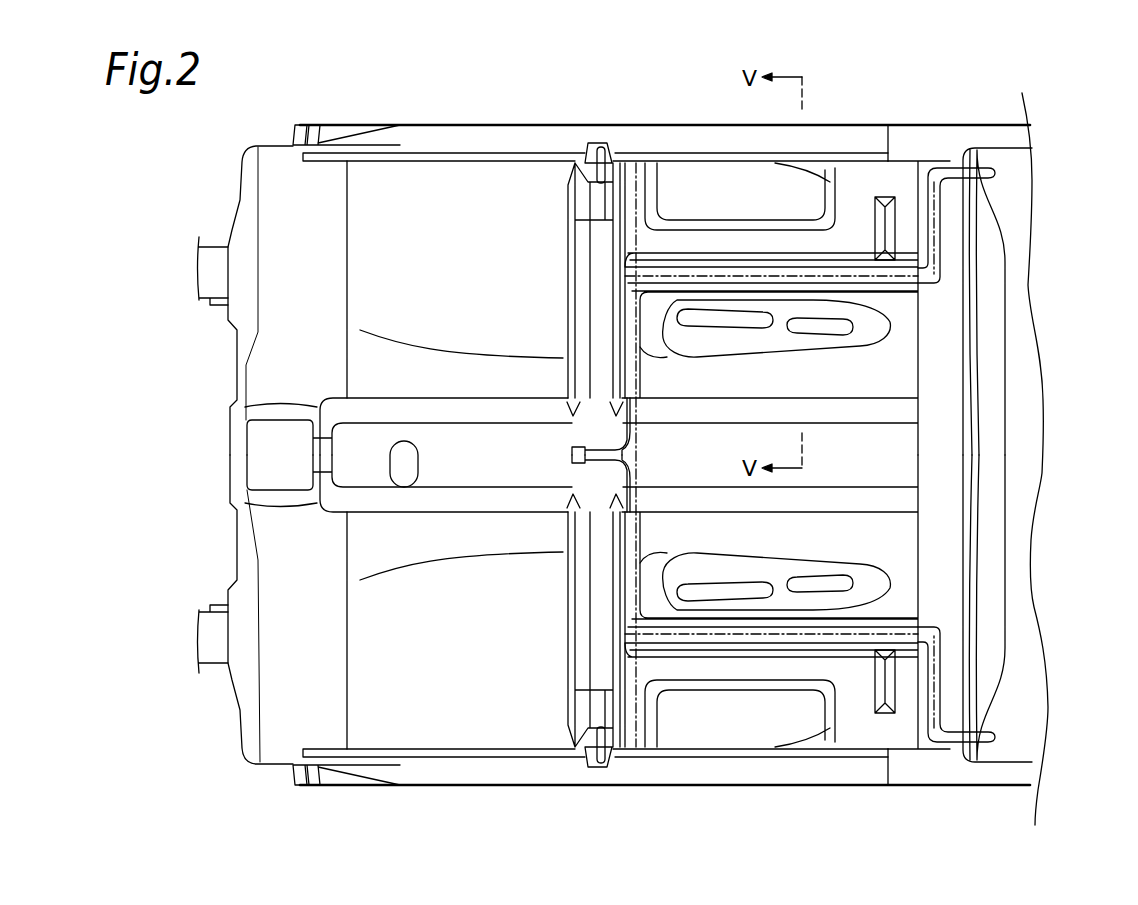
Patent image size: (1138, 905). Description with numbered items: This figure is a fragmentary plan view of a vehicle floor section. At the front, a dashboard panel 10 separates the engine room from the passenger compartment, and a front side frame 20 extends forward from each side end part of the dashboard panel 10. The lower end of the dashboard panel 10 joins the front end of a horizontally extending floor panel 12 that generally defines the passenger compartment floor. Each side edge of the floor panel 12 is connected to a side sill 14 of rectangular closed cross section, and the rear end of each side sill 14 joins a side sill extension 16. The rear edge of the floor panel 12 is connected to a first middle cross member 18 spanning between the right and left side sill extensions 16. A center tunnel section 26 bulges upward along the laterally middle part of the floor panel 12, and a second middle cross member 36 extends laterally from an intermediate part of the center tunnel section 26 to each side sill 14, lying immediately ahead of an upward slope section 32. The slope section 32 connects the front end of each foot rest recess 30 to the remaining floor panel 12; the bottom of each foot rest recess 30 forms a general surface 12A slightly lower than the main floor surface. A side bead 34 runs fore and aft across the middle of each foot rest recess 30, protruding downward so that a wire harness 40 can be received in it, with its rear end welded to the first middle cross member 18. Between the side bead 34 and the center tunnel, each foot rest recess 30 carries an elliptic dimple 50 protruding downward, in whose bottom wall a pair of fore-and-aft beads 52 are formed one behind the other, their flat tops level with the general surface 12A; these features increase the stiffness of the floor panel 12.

The dashboard panel 10 is at (283, 168).
The floor panel 12 is at (478, 185).
The general surface 12A is at (900, 345).
The side sill 14 is at (440, 135).
The side sill extension 16 is at (905, 142).
The first middle cross member 18 is at (950, 290).
The front side frame 20 is at (213, 258).
The center tunnel section 26 is at (493, 467).
The foot rest recess 30 is at (916, 326).
The upward slope section 32 is at (653, 240).
The side bead 34 is at (843, 263).
The second middle cross member 36 is at (600, 262).
The wire harness 40 is at (639, 385).
The dimple 50 is at (800, 338).
The bead 52 is at (732, 322).